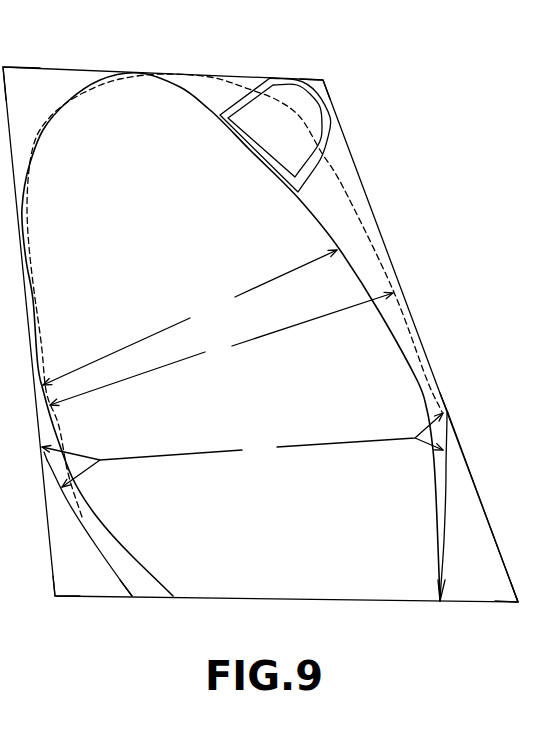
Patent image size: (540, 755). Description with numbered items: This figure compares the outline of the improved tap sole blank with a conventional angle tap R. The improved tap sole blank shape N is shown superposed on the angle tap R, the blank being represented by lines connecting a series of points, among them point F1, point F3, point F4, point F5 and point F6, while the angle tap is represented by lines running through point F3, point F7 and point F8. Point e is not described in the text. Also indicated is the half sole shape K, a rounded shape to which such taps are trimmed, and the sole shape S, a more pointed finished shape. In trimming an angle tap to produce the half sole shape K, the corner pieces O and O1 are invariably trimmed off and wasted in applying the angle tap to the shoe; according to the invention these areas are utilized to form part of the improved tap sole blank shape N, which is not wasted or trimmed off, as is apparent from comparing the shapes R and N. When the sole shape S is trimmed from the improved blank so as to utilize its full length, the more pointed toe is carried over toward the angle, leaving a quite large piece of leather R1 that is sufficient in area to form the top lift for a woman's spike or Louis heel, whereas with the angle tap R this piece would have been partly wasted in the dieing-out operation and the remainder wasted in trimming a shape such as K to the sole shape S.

The corner point e is at (20, 72).
The point F³ F3 is at (323, 80).
The angle tap R is at (352, 150).
The piece of leather R1 is at (312, 117).
The sole shape S is at (190, 317).
The half sole shape K is at (221, 348).
The improved tap sole blank shape N is at (242, 450).
The point F⁴ F4 is at (448, 412).
The corner piece O1 is at (462, 508).
The point F¹ F1 is at (47, 460).
The corner piece O is at (67, 525).
The point F⁸ F8 is at (55, 596).
The point F⁶ F6 is at (132, 596).
The point F⁵ F5 is at (440, 601).
The point F⁷ F7 is at (518, 602).